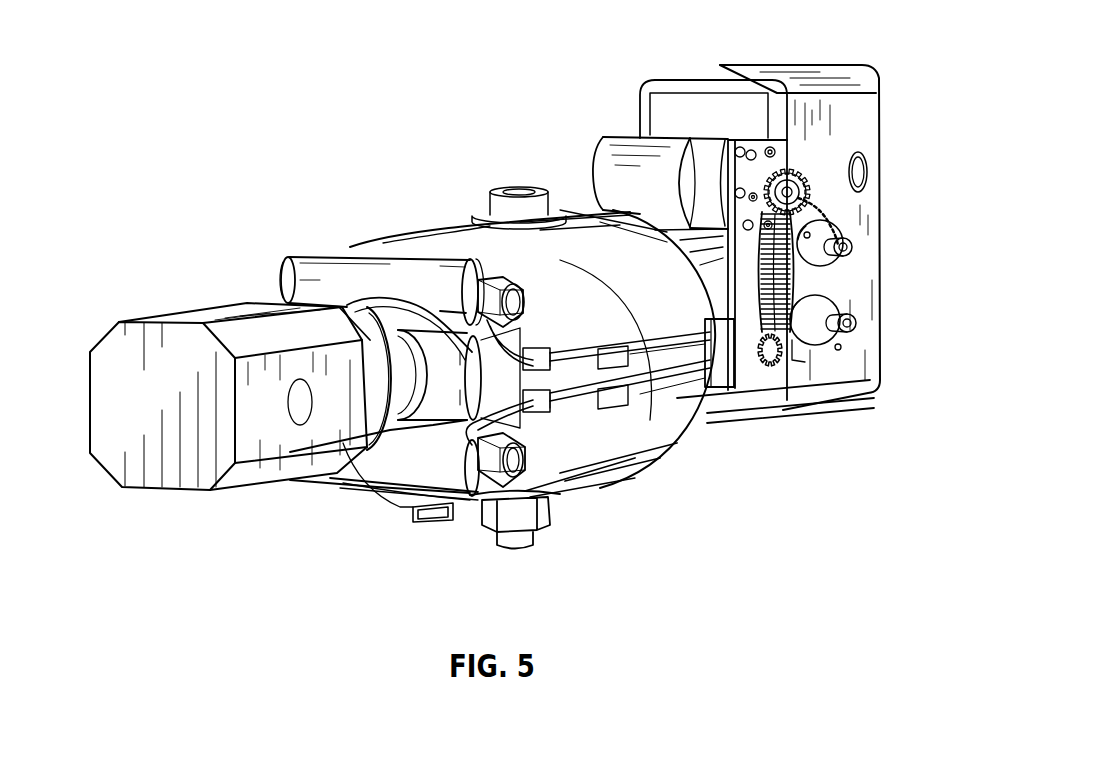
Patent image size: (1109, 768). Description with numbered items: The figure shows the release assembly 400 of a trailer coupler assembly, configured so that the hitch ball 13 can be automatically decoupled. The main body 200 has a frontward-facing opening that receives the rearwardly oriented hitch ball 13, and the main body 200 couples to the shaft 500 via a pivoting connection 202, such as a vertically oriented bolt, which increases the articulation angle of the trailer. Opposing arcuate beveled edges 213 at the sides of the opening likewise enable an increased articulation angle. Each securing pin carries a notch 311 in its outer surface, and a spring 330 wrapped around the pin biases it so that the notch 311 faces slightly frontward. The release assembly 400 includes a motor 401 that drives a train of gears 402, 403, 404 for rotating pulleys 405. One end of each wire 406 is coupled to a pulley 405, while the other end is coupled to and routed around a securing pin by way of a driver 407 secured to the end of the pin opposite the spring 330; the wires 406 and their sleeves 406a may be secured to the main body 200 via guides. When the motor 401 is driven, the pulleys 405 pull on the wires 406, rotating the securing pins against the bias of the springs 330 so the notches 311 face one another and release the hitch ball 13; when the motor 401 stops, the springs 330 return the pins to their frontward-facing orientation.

The hitch ball 13 is at (108, 455).
The main body 200 is at (445, 237).
The pivoting connection 202 is at (515, 186).
The beveled edge 213 is at (530, 430).
The notch 311 is at (380, 307).
The spring 330 is at (287, 275).
The release assembly 400 is at (580, 106).
The motor 401 is at (633, 148).
The gear 402 is at (783, 160).
The gear 403 is at (823, 213).
The gear 404 is at (790, 305).
The pulley 405 is at (833, 307).
The wire 406 is at (537, 362).
The sleeve 406a is at (668, 376).
The driver 407 is at (478, 497).
The shaft 500 is at (728, 411).